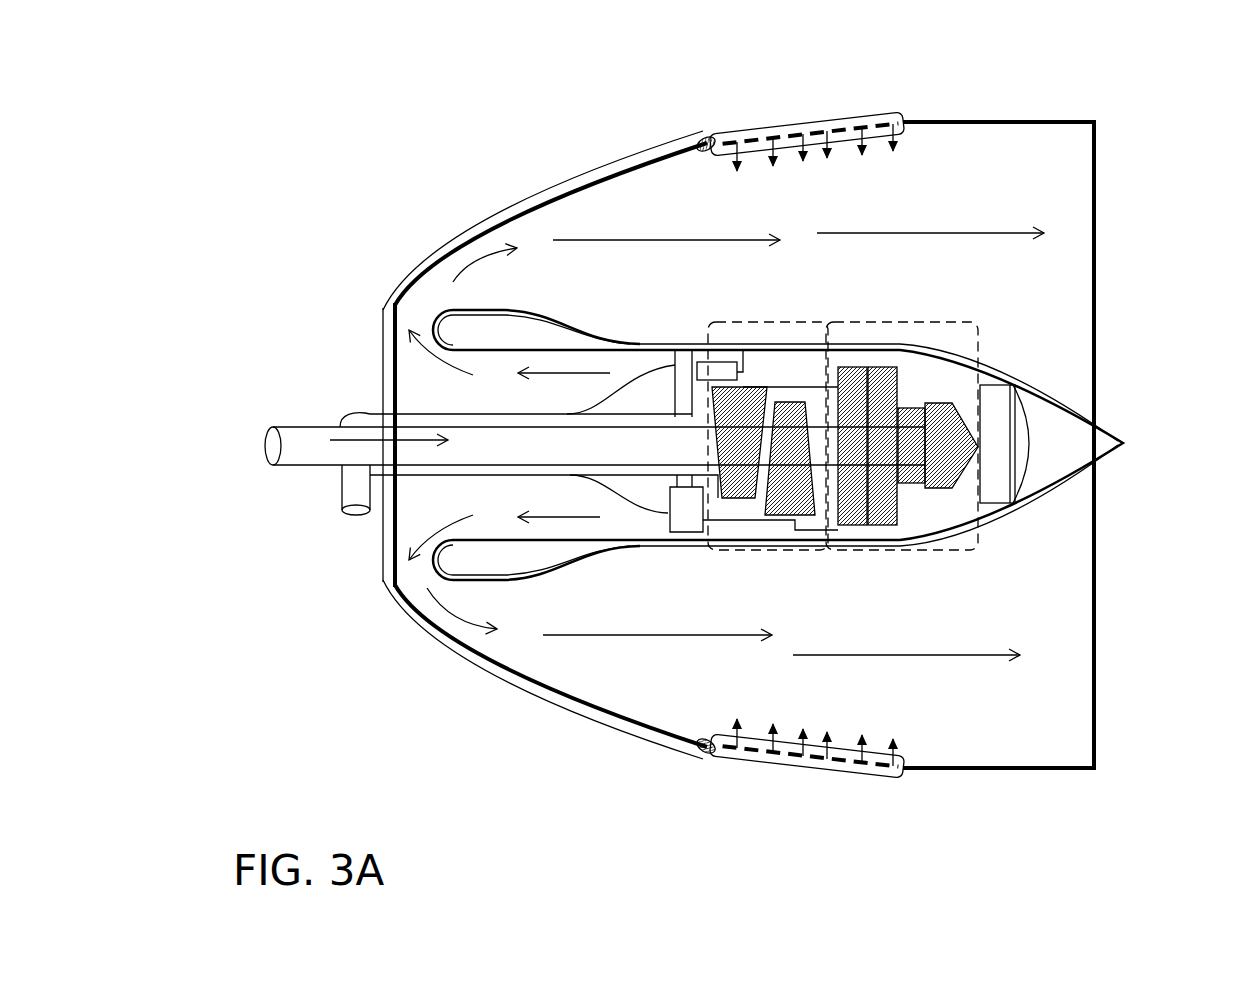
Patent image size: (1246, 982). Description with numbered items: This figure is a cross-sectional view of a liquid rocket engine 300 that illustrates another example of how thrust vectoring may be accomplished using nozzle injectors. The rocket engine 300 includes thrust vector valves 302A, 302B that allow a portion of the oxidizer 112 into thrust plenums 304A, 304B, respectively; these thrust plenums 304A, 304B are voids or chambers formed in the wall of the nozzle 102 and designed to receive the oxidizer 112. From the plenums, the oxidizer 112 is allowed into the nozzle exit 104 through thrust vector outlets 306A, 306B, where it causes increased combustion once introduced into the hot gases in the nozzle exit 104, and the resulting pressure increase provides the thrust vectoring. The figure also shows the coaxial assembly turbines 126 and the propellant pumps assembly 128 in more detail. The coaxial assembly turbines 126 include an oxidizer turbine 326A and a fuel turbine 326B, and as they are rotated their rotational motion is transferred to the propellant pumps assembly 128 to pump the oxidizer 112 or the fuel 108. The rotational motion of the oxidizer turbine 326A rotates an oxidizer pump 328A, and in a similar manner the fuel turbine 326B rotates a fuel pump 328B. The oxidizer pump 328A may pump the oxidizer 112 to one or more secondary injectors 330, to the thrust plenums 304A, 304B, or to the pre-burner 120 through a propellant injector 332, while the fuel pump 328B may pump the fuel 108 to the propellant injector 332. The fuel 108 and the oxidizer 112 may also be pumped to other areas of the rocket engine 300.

The rocket engine 300 is at (392, 82).
The nozzle 102 is at (1040, 116).
The nozzle exit 104 is at (1060, 158).
The fuel 108 is at (260, 443).
The oxidizer 112 is at (353, 512).
The pre-burner 120 is at (991, 388).
The coaxial assembly turbines 126 is at (838, 322).
The propellant pumps assembly 128 is at (717, 322).
The thrust vector valve 302A is at (703, 138).
The thrust vector valve 302B is at (704, 752).
The thrust plenum 304A is at (788, 124).
The thrust plenum 304B is at (780, 768).
The thrust vector outlet 306A is at (815, 160).
The thrust vector outlet 306B is at (815, 731).
The oxidizer turbine 326A is at (882, 525).
The fuel turbine 326B is at (937, 489).
The oxidizer pump 328A is at (737, 500).
The fuel pump 328B is at (765, 517).
The secondary injector 330 is at (690, 352).
The propellant injector 332 is at (1029, 470).